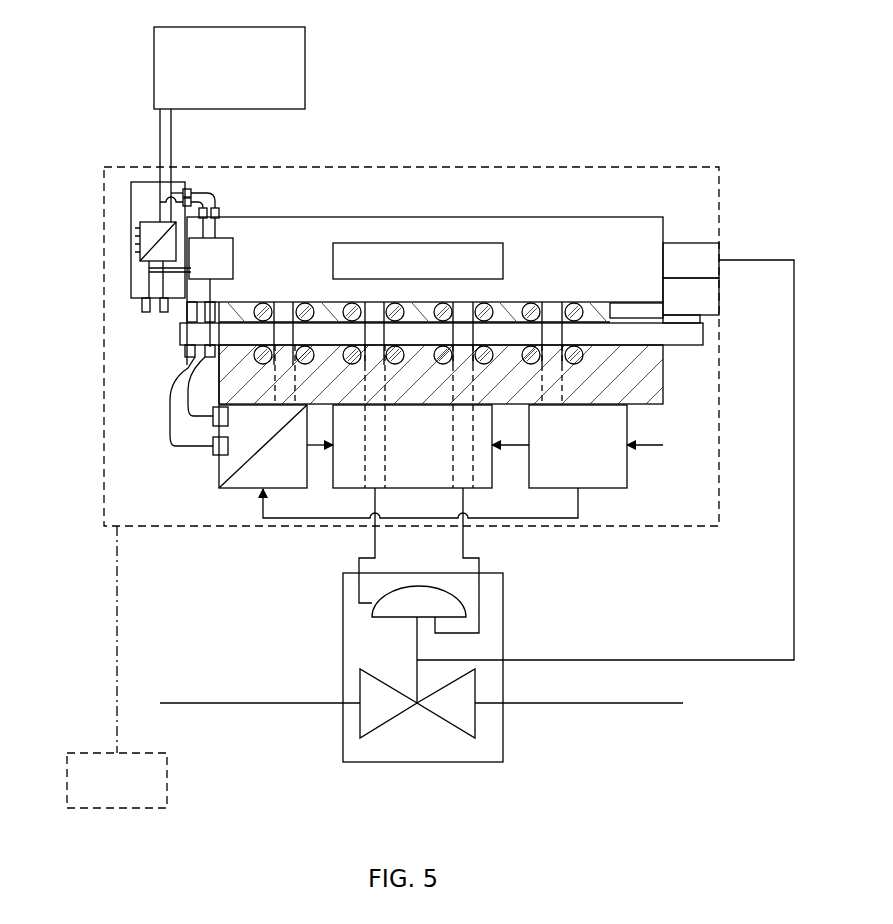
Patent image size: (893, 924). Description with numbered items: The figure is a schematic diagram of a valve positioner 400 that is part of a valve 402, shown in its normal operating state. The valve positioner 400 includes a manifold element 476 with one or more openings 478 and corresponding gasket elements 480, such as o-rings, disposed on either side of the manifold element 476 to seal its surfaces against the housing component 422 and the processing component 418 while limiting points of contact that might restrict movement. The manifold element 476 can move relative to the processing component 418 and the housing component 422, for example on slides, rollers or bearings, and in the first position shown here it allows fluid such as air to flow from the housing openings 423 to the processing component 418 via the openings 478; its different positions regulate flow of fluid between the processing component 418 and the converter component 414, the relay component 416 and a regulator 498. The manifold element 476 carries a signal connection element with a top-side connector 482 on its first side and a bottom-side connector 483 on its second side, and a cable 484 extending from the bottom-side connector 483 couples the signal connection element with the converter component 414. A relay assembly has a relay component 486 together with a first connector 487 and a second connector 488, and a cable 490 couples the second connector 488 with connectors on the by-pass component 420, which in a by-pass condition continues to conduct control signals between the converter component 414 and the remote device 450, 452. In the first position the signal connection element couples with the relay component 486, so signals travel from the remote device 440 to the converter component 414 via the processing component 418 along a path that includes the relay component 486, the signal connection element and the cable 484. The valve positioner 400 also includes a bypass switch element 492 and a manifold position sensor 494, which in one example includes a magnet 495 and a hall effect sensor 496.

The valve positioner 400 is at (411, 346).
The valve 402 is at (709, 791).
The converter component 414 is at (276, 446).
The relay component 416 is at (412, 489).
The processing component 418 is at (425, 259).
The by-pass component 420 is at (131, 190).
The housing component 422 is at (655, 395).
The housing openings 423 is at (563, 382).
The remote device 440 is at (229, 124).
The remote device 450 is at (140, 258).
The transducer 452 is at (118, 264).
The manifold element 476 is at (662, 345).
The openings 478 is at (650, 360).
The gasket elements 480 is at (495, 357).
The top-side connector 482 is at (180, 316).
The bottom-side connector 483 is at (207, 354).
The cable 484 is at (187, 357).
The relay component 486 is at (211, 292).
The first connector 487 is at (185, 318).
The second connector 488 is at (221, 212).
The cable 490 is at (193, 191).
The bypass switch element 492 is at (117, 667).
The manifold position sensor 494 is at (730, 278).
The magnet 495 is at (700, 318).
The hall effect sensor 496 is at (658, 310).
The regulator 498 is at (463, 461).